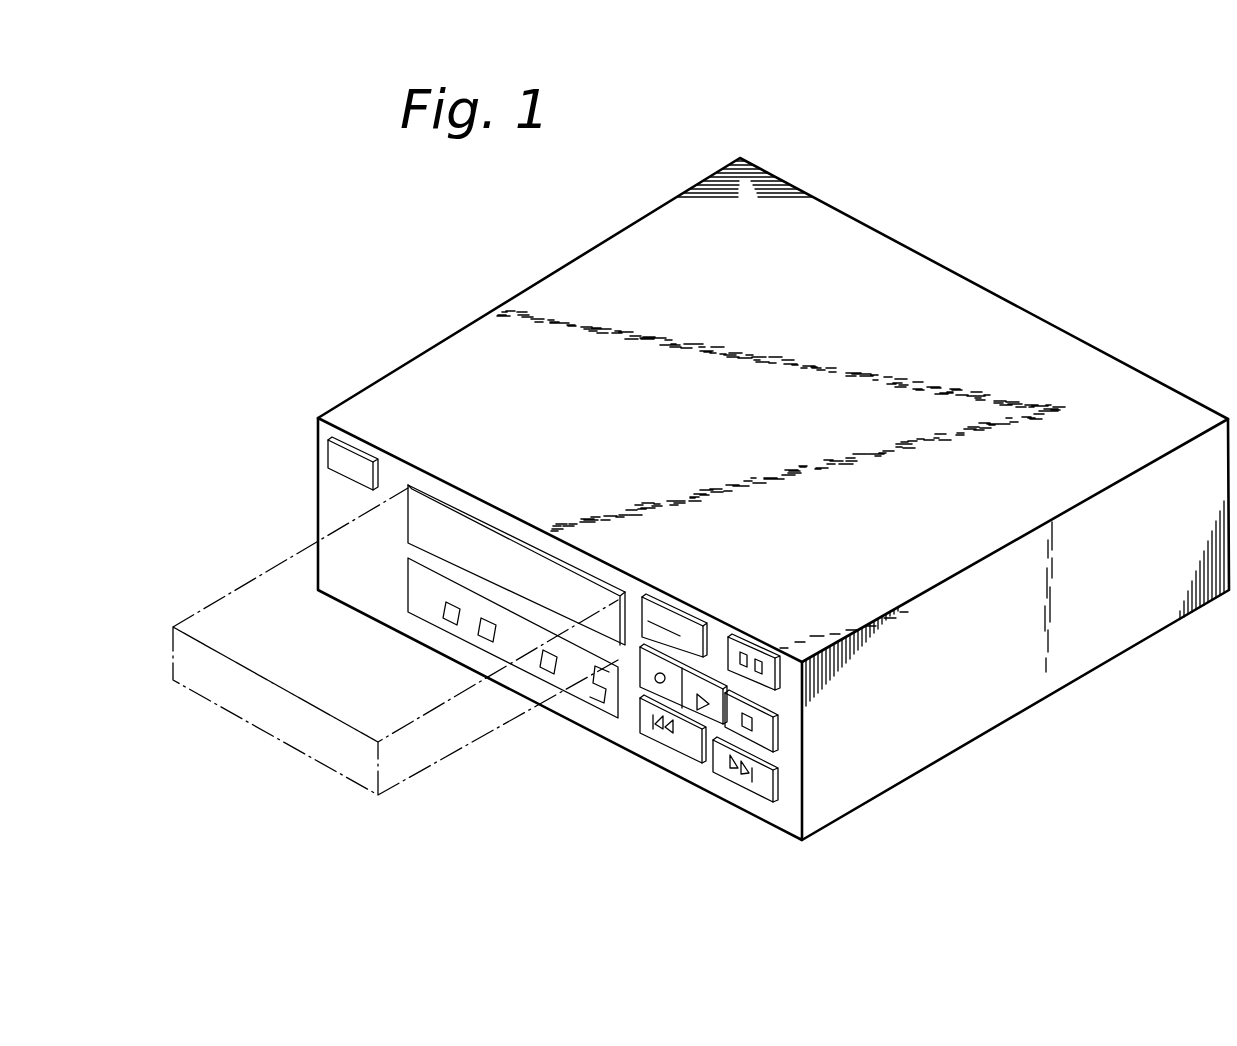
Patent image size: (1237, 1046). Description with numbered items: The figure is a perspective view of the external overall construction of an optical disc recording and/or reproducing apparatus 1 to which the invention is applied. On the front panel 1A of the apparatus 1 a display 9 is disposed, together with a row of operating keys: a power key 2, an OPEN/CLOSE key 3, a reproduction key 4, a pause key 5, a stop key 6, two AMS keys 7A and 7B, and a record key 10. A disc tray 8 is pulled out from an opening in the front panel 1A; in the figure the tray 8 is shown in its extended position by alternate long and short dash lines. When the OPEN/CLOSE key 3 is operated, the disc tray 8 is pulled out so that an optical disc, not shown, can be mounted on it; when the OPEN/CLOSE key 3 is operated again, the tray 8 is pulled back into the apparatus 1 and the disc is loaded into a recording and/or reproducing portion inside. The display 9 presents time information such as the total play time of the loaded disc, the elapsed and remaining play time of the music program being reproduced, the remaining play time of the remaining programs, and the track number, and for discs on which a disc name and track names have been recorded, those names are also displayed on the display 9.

The optical disc recording and/or reproducing apparatus 1 is at (424, 343).
The front panel 1A is at (325, 497).
The power key 2 is at (327, 447).
The OPEN/CLOSE key 3 is at (676, 600).
The reproduction key 4 is at (715, 686).
The pause key 5 is at (780, 677).
The stop key 6 is at (780, 735).
The AMS key 7A is at (667, 745).
The AMS key 7B is at (748, 793).
The disc tray 8 is at (505, 545).
The display 9 is at (530, 662).
The record key 10 is at (642, 683).